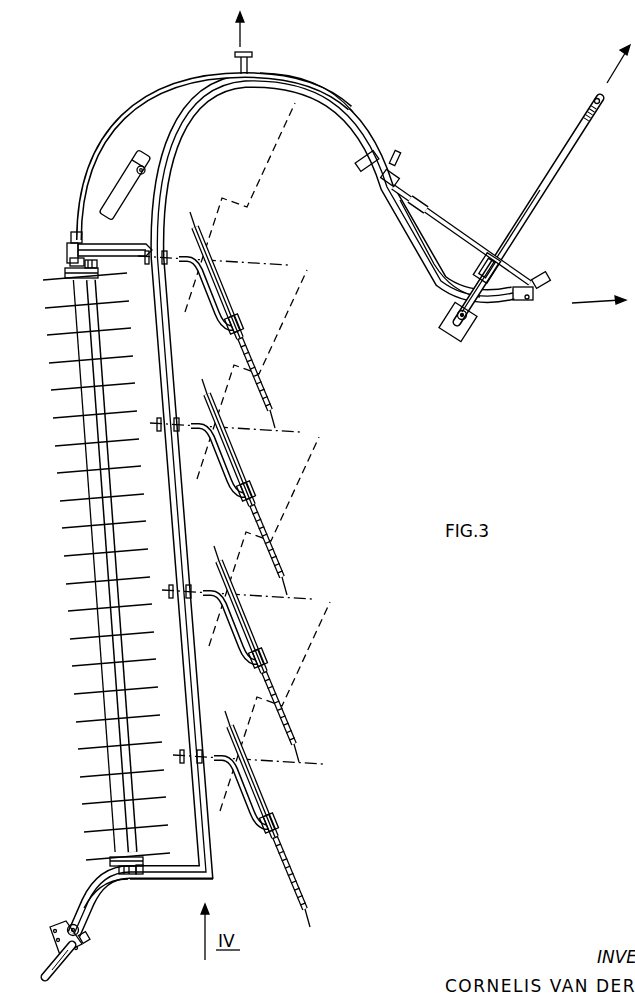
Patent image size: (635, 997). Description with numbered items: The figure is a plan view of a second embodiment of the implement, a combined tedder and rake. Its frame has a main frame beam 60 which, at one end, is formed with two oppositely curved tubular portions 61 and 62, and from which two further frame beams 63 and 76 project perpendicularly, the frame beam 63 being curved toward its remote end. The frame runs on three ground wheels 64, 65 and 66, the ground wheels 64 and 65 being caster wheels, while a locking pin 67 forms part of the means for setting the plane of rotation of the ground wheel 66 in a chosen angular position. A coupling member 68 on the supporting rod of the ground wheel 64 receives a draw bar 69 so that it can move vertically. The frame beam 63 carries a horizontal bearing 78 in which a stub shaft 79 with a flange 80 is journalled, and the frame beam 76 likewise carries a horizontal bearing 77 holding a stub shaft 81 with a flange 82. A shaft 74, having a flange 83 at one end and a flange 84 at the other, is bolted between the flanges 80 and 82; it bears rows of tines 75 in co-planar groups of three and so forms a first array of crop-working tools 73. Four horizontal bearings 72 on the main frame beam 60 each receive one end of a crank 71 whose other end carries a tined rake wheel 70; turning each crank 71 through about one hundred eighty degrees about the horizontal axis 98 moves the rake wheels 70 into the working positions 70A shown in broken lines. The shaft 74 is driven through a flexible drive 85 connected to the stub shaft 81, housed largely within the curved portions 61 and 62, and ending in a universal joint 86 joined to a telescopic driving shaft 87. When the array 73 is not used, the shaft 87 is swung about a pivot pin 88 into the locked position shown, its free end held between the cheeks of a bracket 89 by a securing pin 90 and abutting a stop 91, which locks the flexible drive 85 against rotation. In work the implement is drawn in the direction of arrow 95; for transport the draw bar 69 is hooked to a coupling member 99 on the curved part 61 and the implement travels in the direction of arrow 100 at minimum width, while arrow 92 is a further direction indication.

The main frame beam 60 is at (186, 534).
The curved portion 61 is at (346, 96).
The curved portion 62 is at (443, 294).
The frame beam 63 is at (172, 882).
The ground wheel 64 is at (446, 330).
The ground wheel 65 is at (125, 190).
The ground wheel 66 is at (89, 917).
The locking pin 67 is at (68, 958).
The coupling member 68 is at (477, 289).
The draw bar 69 is at (562, 176).
The tined rake wheel 70 is at (230, 312).
The rake wheel working position 70A is at (305, 473).
The crank 71 is at (237, 648).
The horizontal bearing 72 is at (168, 596).
The first array of crop-working tools 73 is at (72, 462).
The shaft 74 is at (95, 490).
The tine 75 is at (88, 530).
The frame beam 76 is at (118, 244).
The horizontal bearing 77 is at (67, 250).
The horizontal bearing 78 is at (100, 882).
The stub shaft 79 is at (144, 866).
The flange 80 is at (119, 869).
The stub shaft 81 is at (90, 264).
The flange 82 is at (69, 263).
The flange 83 is at (112, 860).
The flange 84 is at (68, 279).
The flexible drive 85 is at (105, 148).
The universal joint 86 is at (547, 299).
The telescopic driving shaft 87 is at (462, 215).
The pivot pin 88 is at (547, 288).
The bracket 89 is at (409, 175).
The securing pin 90 is at (402, 155).
The stop 91 is at (370, 153).
The direction arrow 92 is at (610, 64).
The direction arrow 95 is at (599, 311).
The horizontal axis 98 is at (330, 598).
The coupling member 99 is at (238, 64).
The direction arrow 100 is at (258, 29).